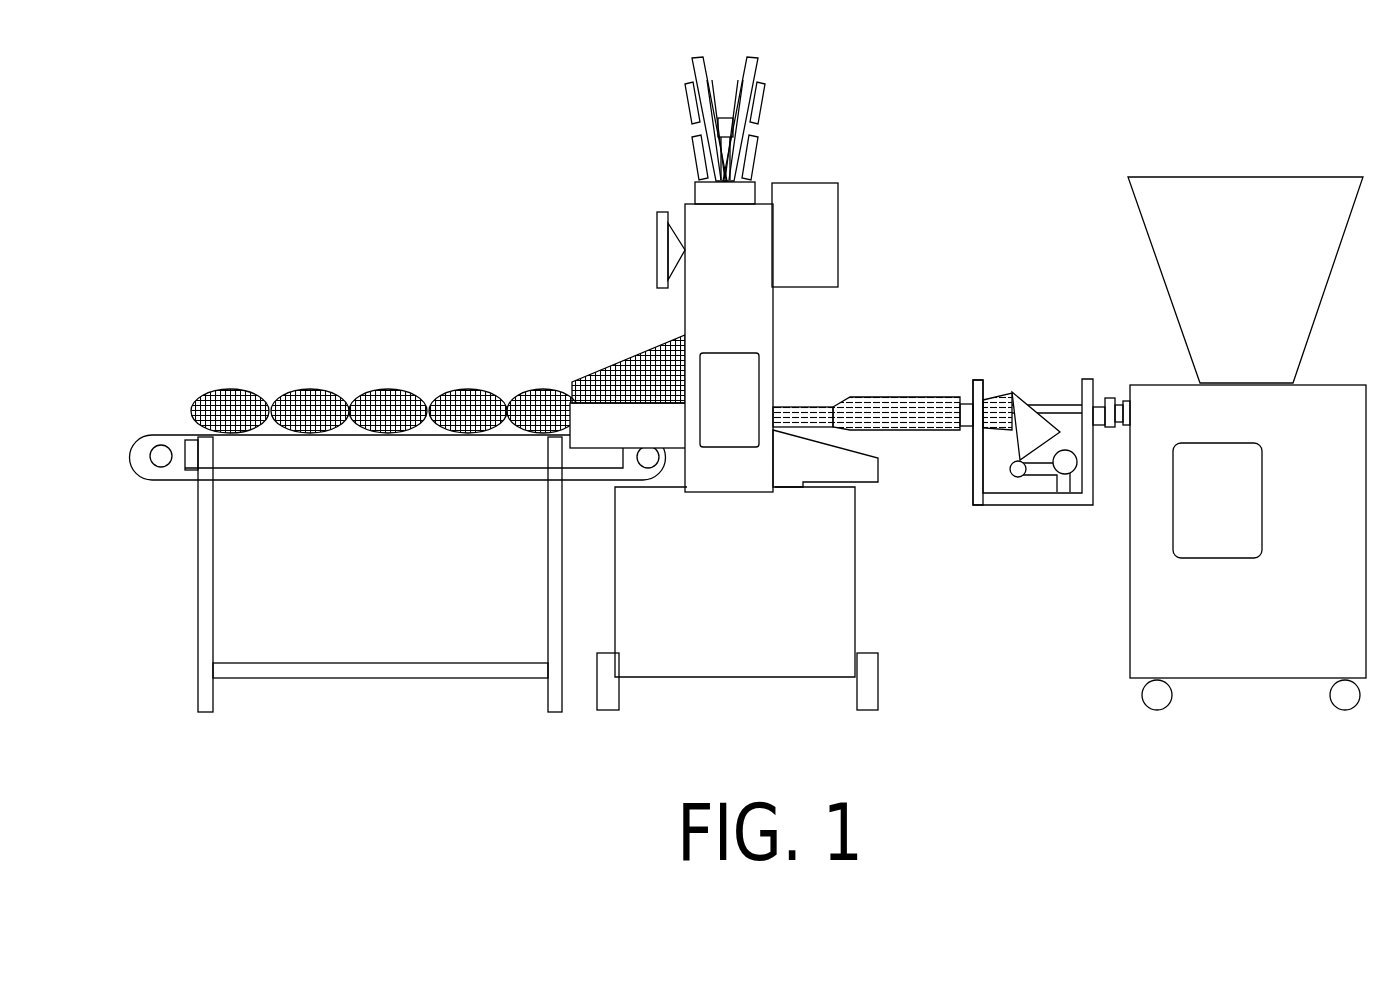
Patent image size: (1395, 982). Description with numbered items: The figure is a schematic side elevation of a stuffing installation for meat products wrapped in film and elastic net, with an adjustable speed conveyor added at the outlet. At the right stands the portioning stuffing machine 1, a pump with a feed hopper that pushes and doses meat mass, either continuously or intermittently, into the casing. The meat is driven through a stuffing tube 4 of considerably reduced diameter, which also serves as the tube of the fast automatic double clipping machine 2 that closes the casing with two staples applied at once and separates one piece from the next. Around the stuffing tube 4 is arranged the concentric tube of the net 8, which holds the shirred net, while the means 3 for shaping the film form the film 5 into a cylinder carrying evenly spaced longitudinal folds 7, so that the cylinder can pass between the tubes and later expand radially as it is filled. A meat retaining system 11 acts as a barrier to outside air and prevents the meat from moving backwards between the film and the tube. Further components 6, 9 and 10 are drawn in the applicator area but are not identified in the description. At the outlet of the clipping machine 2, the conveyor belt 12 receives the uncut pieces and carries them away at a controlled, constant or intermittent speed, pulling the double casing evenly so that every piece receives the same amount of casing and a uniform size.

The portioning stuffing machine 1 is at (1250, 637).
The fast automatic double clipping machine 2 is at (837, 595).
The means for shaping the film 3 is at (1025, 415).
The stuffing tube 4 is at (1070, 403).
The film 5 is at (1069, 449).
The lever 6 is at (1065, 485).
The longitudinal folds 7 is at (1000, 395).
The tube of the net 8 is at (972, 400).
The extrusion tube 9 is at (888, 395).
The holder 10 is at (1020, 497).
The meat retaining system 11 is at (778, 407).
The conveyor belt 12 is at (335, 452).